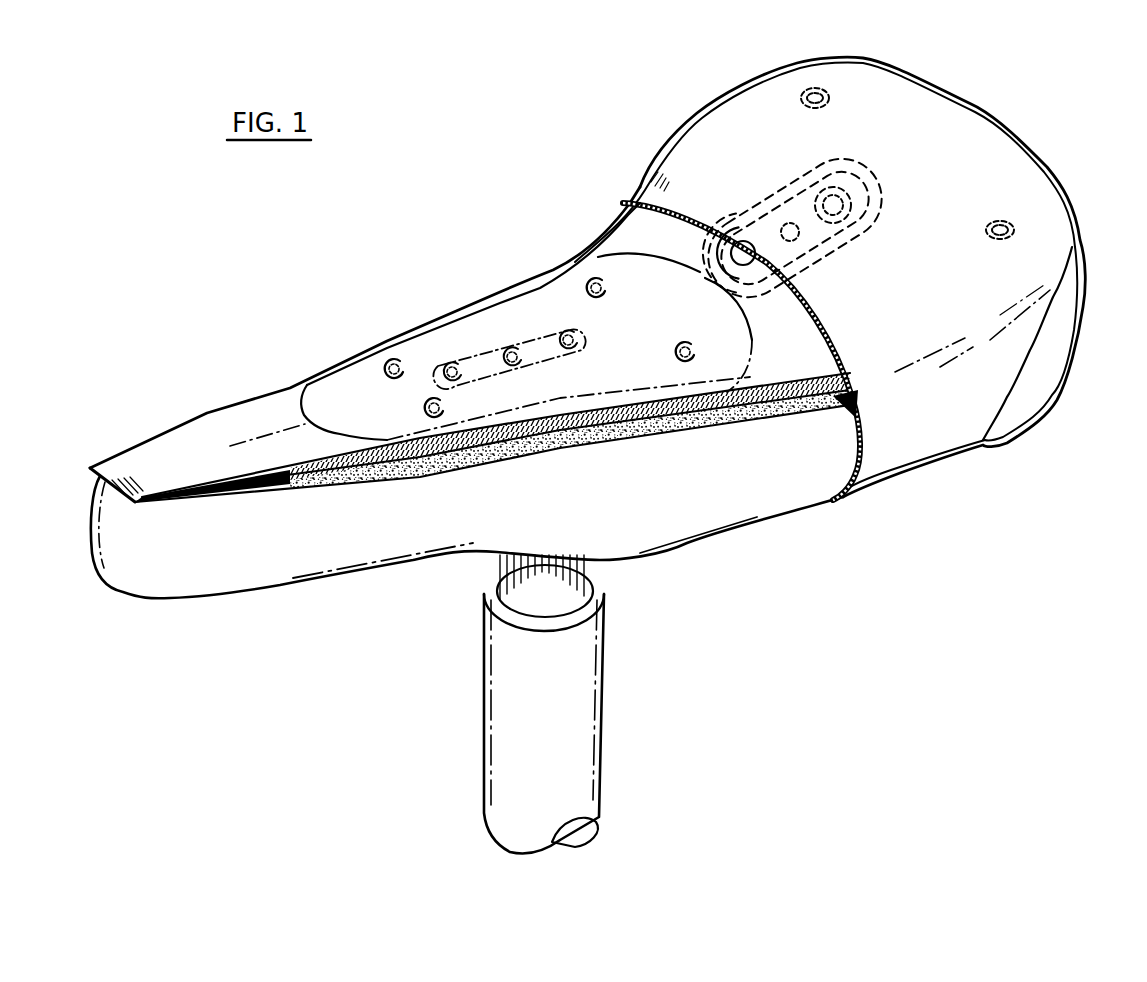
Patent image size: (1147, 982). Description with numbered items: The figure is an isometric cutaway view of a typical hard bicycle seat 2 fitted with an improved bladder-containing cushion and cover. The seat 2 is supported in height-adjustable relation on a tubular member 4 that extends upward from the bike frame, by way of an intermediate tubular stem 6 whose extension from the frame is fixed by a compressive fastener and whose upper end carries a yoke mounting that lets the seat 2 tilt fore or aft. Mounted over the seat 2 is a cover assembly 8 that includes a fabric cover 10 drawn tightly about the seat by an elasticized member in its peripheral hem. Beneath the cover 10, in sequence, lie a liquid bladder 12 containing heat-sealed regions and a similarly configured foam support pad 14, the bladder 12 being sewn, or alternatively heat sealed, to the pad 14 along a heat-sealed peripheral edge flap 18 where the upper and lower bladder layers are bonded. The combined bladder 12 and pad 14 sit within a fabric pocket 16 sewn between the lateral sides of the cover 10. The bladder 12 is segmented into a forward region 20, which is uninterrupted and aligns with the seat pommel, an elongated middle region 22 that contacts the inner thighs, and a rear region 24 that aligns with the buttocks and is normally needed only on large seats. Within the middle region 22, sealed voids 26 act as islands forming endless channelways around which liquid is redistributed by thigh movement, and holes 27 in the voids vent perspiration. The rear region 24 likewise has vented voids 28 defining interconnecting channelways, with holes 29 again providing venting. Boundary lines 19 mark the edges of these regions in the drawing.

The bicycle seat 2 is at (233, 565).
The tubular member 4 is at (558, 712).
The tubular stem 6 is at (561, 603).
The cover assembly 8 is at (647, 166).
The fabric cover 10 is at (905, 326).
The liquid bladder 12 is at (207, 413).
The foam support pad 14 is at (508, 452).
The fabric pocket 16 is at (838, 430).
The peripheral edge flap 18 is at (162, 498).
The pad boundary line 19 is at (330, 434).
The forward region 20 is at (202, 468).
The middle region 22 is at (368, 423).
The rear region 24 is at (807, 338).
The voids 26 is at (428, 400).
The holes 27 is at (387, 362).
The vented voids 28 is at (798, 95).
The holes 29 is at (820, 92).